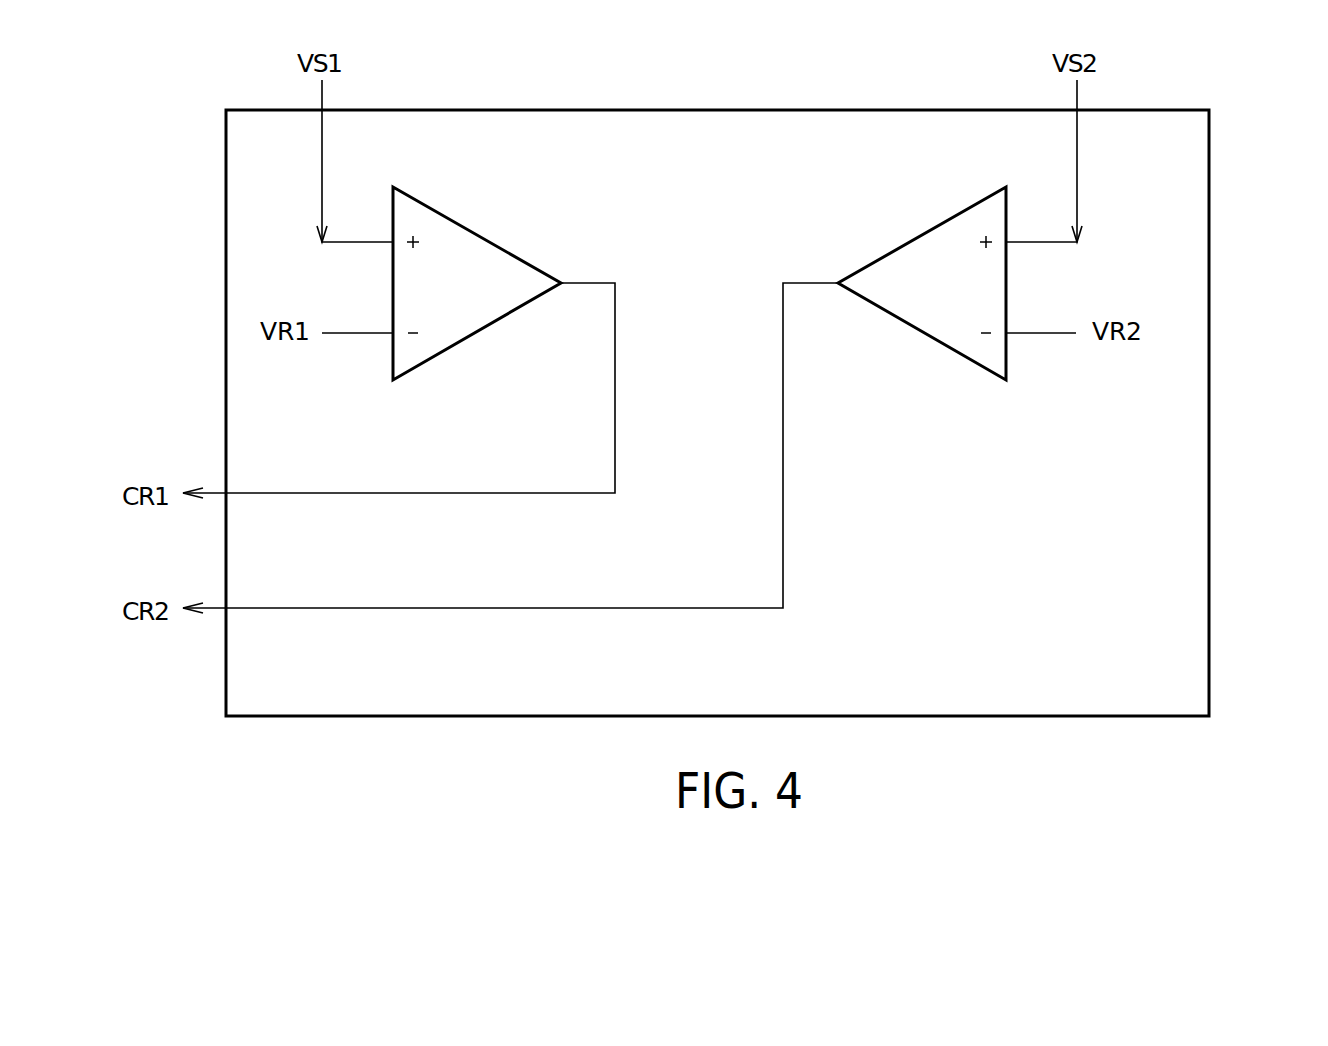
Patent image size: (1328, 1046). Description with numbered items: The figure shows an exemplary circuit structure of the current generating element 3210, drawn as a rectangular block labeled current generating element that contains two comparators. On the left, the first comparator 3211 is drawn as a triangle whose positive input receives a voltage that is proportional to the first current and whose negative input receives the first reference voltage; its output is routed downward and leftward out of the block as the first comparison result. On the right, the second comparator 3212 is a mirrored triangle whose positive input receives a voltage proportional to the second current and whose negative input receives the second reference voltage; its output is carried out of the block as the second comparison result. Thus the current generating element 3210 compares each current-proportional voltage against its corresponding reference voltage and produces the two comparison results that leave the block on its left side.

The current generating element 3210 is at (1209, 183).
The first comparator 3211 is at (478, 235).
The second comparator 3212 is at (922, 235).